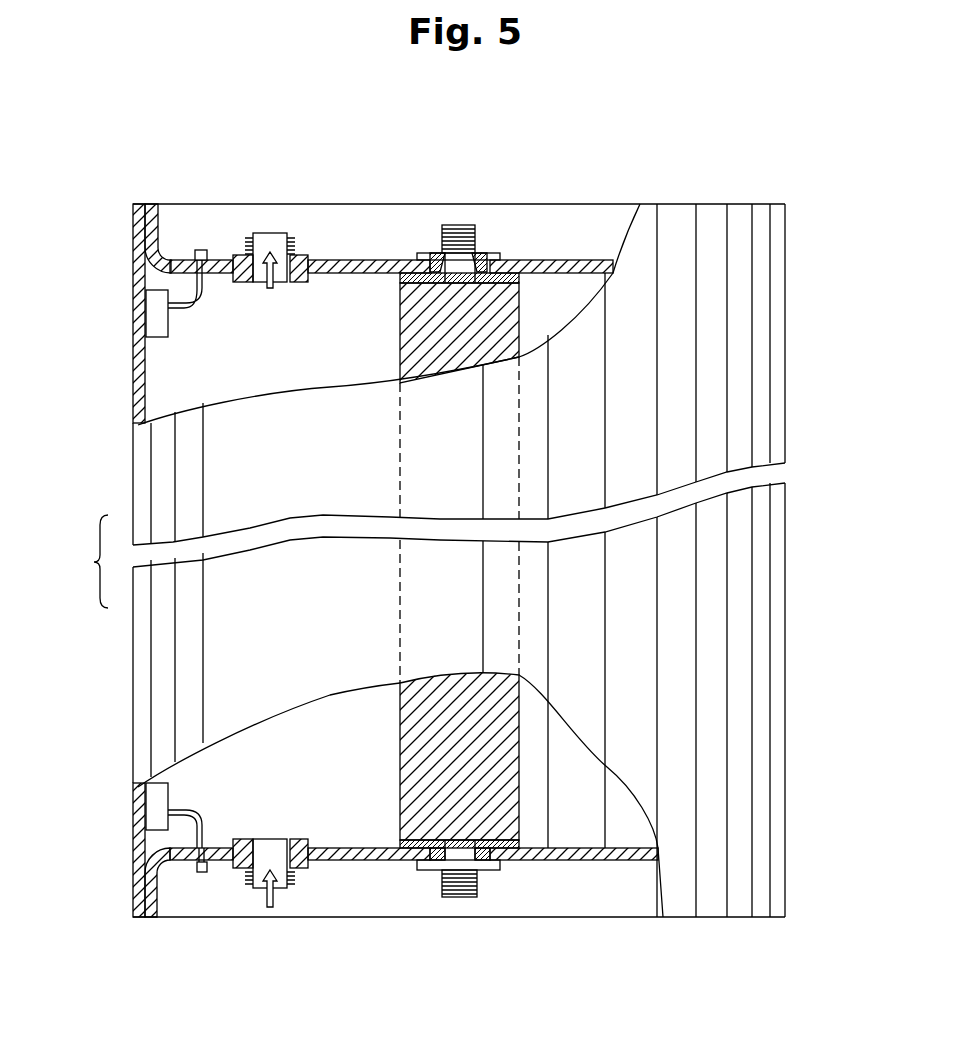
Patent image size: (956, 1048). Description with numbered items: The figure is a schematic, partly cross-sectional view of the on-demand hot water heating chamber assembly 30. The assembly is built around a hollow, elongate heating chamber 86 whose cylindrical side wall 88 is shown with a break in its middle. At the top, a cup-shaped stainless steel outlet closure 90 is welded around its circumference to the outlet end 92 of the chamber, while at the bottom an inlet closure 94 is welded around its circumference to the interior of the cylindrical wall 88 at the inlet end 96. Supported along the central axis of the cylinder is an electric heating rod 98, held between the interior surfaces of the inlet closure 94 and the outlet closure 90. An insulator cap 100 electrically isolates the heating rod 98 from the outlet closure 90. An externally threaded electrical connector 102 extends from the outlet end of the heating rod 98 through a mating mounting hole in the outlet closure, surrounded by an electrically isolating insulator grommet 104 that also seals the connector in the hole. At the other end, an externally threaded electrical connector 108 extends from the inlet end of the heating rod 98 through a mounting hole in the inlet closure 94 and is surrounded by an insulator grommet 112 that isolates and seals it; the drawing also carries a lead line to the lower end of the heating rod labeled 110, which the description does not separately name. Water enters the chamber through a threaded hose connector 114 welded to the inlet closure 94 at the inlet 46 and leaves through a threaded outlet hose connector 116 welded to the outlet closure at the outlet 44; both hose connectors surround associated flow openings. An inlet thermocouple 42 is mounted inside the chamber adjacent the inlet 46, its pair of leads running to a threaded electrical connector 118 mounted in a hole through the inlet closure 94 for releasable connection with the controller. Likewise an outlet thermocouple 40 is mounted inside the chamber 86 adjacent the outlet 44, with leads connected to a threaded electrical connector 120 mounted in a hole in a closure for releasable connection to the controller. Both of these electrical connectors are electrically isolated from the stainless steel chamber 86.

The on-demand hot water heating chamber assembly 30 is at (700, 192).
The outlet thermocouple 40 is at (155, 323).
The inlet thermocouple 42 is at (153, 808).
The outlet 44 is at (268, 194).
The inlet 46 is at (283, 927).
The heating chamber 86 is at (760, 325).
The cylindrical side wall 88 is at (780, 718).
The outlet closure 90 is at (603, 258).
The outlet end 92 is at (155, 220).
The inlet closure 94 is at (617, 860).
The inlet end 96 is at (163, 907).
The heating rod 98 is at (413, 310).
The insulator cap 100 is at (510, 300).
The electrical connector 102 is at (478, 223).
The insulator grommet 104 is at (428, 253).
The electrical connector 108 is at (467, 890).
The lower hub 110 is at (515, 840).
The insulator grommet 112 is at (430, 870).
The threaded hose connector 114 is at (297, 882).
The threaded outlet hose connector 116 is at (307, 244).
The threaded electrical connector 118 is at (205, 875).
The threaded electrical connector 120 is at (199, 248).